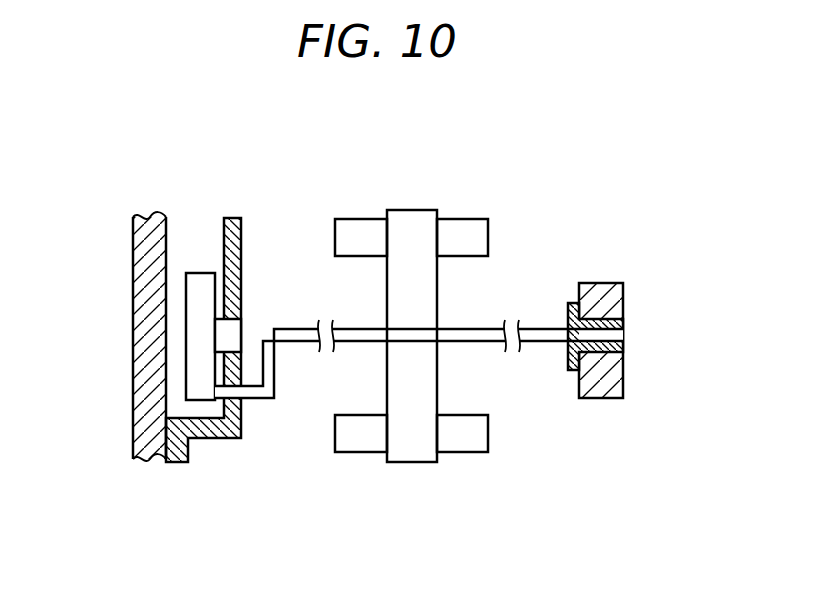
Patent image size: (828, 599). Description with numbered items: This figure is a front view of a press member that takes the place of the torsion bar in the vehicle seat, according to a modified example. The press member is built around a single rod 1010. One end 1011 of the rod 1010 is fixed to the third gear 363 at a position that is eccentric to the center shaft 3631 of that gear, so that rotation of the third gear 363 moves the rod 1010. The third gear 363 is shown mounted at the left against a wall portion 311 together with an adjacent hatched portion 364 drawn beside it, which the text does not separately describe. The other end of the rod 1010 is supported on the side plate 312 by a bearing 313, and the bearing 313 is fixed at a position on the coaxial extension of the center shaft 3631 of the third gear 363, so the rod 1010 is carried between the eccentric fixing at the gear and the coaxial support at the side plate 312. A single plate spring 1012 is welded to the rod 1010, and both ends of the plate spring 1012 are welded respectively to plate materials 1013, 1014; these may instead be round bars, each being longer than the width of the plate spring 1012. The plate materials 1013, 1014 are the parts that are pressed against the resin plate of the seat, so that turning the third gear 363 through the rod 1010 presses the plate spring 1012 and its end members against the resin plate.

The housing wall 311 is at (140, 238).
The side plate 312 is at (617, 300).
The bearing 313 is at (620, 346).
The third gear 363 is at (202, 280).
The center shaft 3631 is at (236, 334).
The bracket 364 is at (208, 440).
The rod 1010 is at (470, 329).
The one end of the rod 1011 is at (258, 398).
The plate spring 1012 is at (408, 462).
The plate material 1013 is at (467, 218).
The plate material 1014 is at (465, 453).